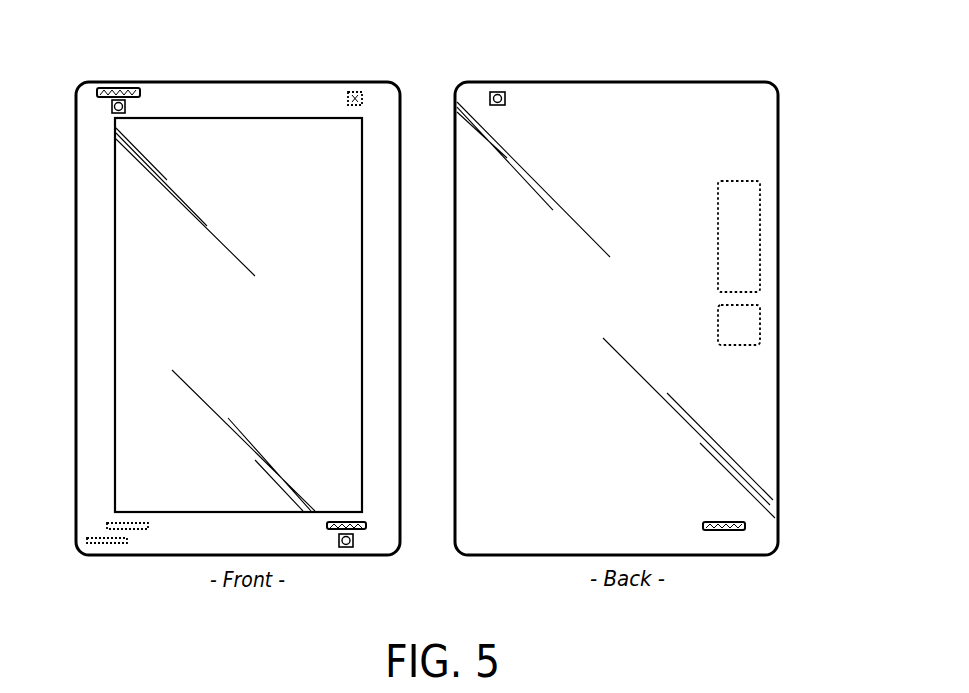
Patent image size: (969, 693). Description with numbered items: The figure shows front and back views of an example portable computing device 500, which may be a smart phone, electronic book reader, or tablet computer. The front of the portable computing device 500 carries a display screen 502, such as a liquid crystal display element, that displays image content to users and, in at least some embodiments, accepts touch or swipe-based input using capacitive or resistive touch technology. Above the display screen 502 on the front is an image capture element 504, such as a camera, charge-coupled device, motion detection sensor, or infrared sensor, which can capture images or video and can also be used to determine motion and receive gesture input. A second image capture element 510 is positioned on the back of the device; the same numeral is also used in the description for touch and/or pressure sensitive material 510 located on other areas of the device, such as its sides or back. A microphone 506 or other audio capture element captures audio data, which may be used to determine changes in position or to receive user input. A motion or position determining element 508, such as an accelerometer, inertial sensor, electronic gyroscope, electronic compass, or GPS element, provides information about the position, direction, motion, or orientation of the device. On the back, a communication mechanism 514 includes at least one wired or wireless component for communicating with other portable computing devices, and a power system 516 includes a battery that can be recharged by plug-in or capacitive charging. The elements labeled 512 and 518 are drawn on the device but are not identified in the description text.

The portable computing device 500 is at (808, 88).
The display screen 502 is at (115, 232).
The image capture element 504 is at (112, 107).
The microphone 506 is at (128, 88).
The motion or position determining element 508 is at (358, 530).
The image capture element 510 is at (352, 92).
The speaker 512 is at (130, 529).
The communication mechanism 514 is at (760, 252).
The power system 516 is at (760, 328).
The connector port 518 is at (106, 545).